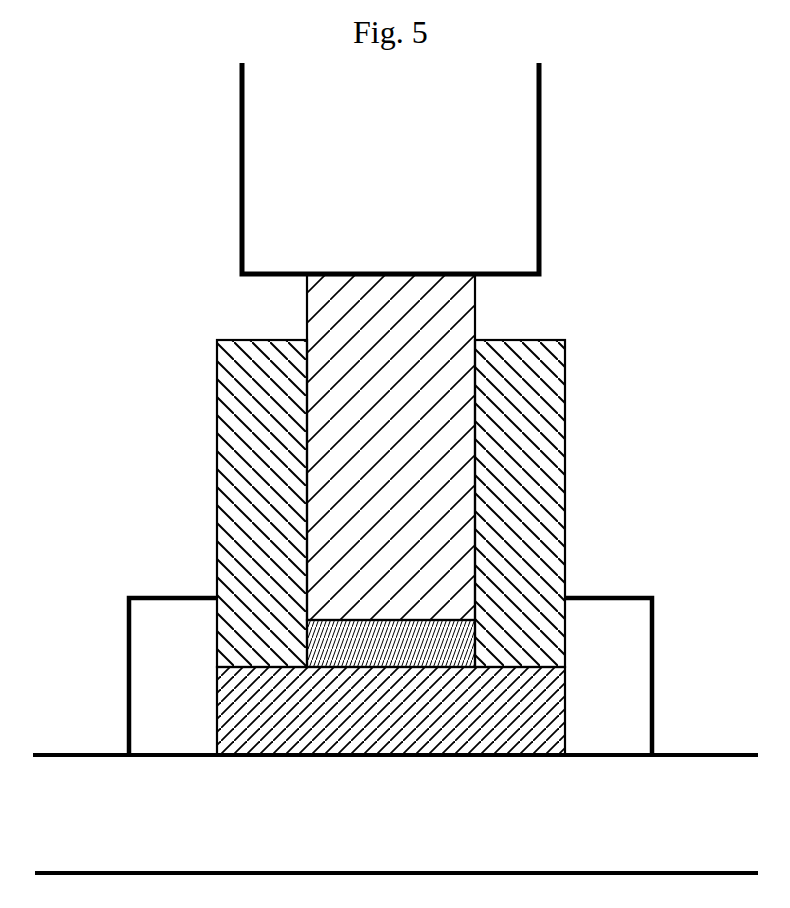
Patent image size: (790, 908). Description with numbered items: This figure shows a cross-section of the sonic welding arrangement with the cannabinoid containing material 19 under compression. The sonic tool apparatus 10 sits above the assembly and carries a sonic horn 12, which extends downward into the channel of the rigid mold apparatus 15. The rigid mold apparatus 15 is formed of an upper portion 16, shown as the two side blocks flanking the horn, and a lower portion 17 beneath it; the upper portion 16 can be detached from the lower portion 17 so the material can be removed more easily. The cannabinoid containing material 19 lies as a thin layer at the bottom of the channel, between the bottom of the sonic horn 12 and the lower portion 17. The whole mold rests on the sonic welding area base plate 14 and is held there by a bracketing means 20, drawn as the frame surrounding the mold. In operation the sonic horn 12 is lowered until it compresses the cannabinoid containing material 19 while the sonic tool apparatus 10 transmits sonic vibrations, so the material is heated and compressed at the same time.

The sonic tool apparatus 10 is at (576, 111).
The sonic horn 12 is at (477, 305).
The sonic welding area base plate 14 is at (401, 828).
The rigid mold apparatus 15 is at (578, 327).
The upper portion 16 is at (565, 434).
The lower portion 17 is at (565, 713).
The cannabinoid containing material 19 is at (307, 642).
The bracketing means 20 is at (654, 627).